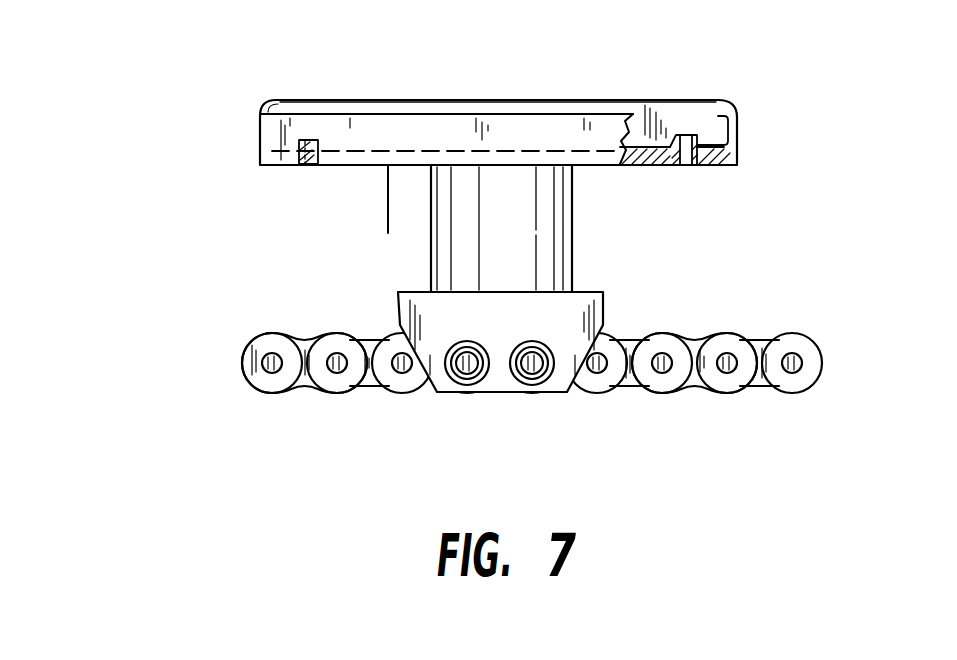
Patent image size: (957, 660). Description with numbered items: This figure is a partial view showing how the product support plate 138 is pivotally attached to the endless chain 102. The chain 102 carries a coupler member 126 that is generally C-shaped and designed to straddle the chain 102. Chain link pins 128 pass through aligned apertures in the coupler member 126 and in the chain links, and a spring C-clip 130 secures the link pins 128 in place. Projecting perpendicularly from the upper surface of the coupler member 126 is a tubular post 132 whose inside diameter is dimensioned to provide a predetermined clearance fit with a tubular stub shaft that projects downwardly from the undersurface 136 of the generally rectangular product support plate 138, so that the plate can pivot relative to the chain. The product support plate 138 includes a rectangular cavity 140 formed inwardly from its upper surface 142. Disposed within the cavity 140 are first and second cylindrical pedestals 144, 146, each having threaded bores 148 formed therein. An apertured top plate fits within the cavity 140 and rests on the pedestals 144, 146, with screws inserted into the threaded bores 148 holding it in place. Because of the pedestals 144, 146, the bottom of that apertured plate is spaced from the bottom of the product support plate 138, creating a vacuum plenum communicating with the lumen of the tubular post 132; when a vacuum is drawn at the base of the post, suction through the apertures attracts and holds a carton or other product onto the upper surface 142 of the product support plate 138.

The chain 102 is at (792, 331).
The coupler member 126 is at (605, 297).
The chain link pins 128 is at (477, 388).
The spring C-clip 130 is at (519, 346).
The tubular post 132 is at (572, 239).
The undersurface 136 is at (392, 216).
The product support plate 138 is at (738, 132).
The rectangular cavity 140 is at (445, 132).
The upper surface 142 is at (691, 99).
The first cylindrical pedestal 144 is at (698, 135).
The second cylindrical pedestal 146 is at (328, 145).
The threaded bores 148 is at (307, 166).